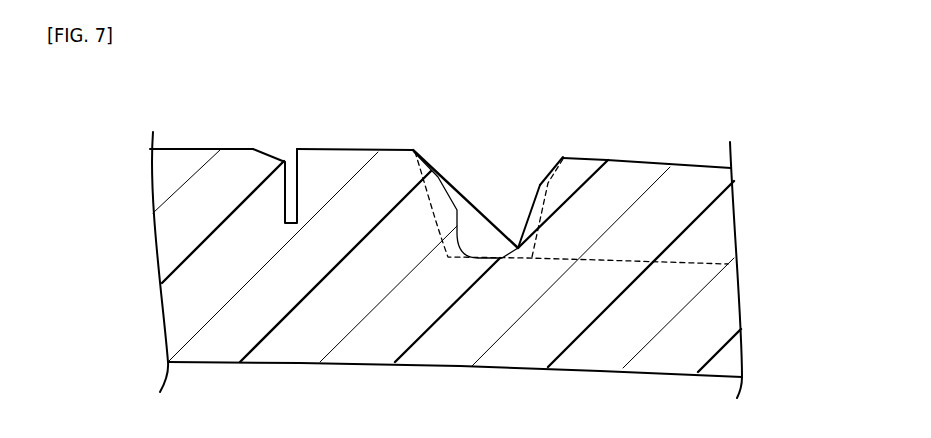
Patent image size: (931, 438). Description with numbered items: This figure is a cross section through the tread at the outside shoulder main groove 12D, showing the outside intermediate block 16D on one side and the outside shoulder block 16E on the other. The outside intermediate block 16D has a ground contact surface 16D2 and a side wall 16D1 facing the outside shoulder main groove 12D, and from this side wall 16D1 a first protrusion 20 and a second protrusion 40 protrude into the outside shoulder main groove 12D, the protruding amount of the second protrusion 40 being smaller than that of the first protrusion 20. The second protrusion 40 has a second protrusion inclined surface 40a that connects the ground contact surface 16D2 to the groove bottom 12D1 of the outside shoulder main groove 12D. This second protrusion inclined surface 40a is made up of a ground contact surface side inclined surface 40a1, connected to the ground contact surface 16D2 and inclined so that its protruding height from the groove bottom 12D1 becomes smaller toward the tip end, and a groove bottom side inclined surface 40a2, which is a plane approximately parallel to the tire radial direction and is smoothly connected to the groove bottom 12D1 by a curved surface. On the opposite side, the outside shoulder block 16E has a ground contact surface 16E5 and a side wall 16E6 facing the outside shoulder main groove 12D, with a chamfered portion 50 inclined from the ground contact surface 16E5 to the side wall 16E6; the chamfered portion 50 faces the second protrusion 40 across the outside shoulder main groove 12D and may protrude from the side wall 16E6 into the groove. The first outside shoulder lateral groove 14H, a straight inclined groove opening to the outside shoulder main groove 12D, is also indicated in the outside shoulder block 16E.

The outside intermediate block 16D is at (228, 192).
The side wall 16D1 is at (428, 190).
The ground contact surface 16D2 is at (333, 147).
The outside shoulder block 16E is at (698, 202).
The ground contact surface 16E5 is at (640, 160).
The side wall 16E6 is at (554, 172).
The outside shoulder main groove 12D is at (517, 184).
The groove bottom 12D1 is at (517, 252).
The first outside shoulder lateral groove 14H is at (673, 261).
The first protrusion 20 is at (512, 256).
The second protrusion 40 is at (446, 210).
The second protrusion inclined surface 40a is at (495, 108).
The ground contact surface side inclined surface 40a1 is at (443, 173).
The groove bottom side inclined surface 40a2 is at (467, 221).
The chamfered portion 50 is at (556, 176).